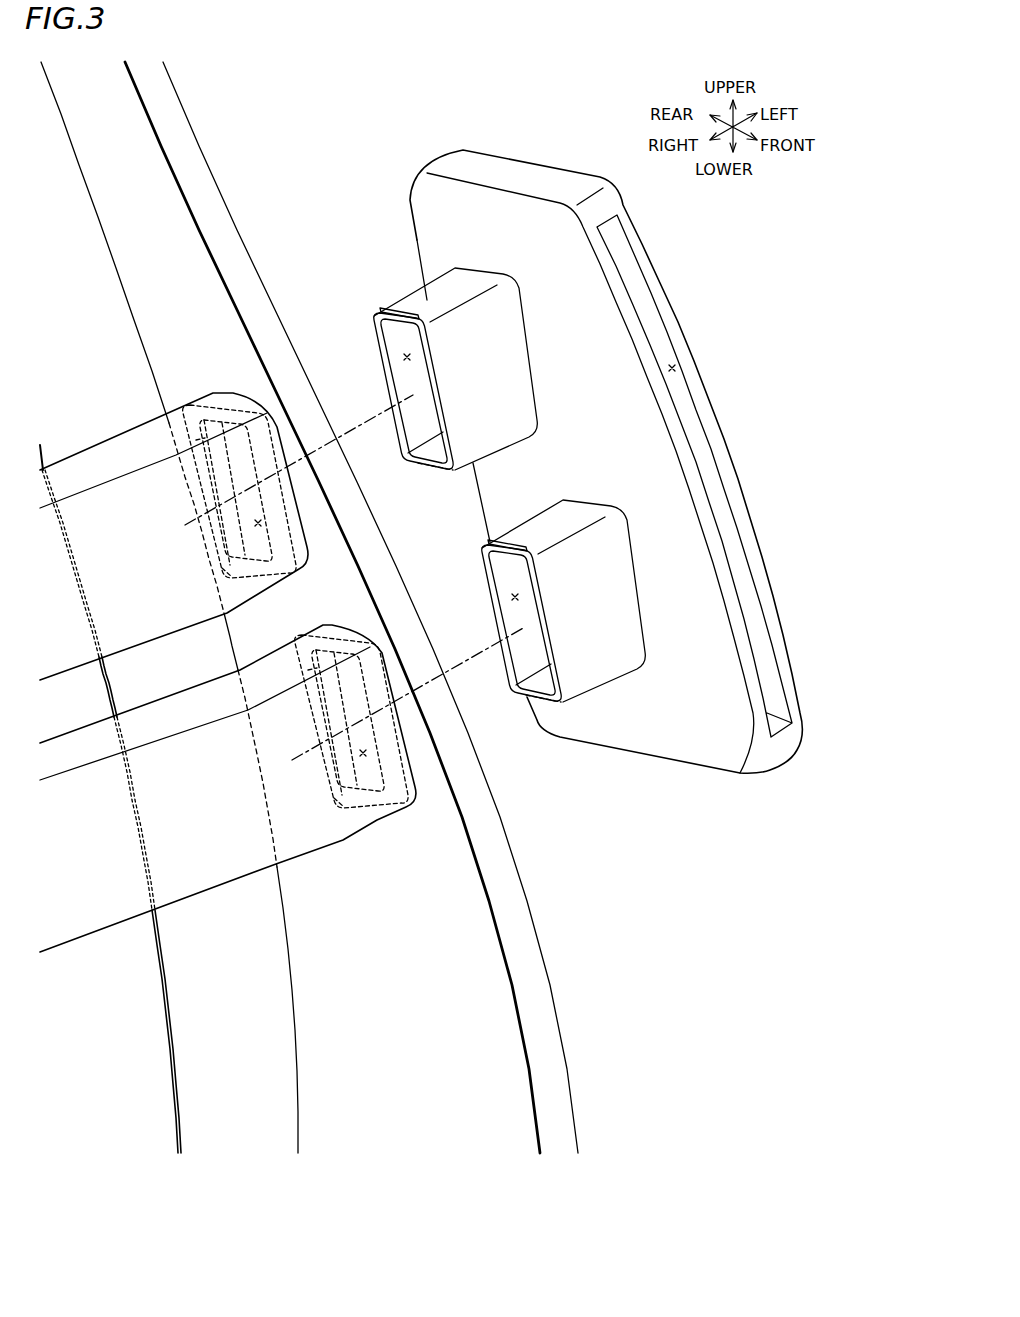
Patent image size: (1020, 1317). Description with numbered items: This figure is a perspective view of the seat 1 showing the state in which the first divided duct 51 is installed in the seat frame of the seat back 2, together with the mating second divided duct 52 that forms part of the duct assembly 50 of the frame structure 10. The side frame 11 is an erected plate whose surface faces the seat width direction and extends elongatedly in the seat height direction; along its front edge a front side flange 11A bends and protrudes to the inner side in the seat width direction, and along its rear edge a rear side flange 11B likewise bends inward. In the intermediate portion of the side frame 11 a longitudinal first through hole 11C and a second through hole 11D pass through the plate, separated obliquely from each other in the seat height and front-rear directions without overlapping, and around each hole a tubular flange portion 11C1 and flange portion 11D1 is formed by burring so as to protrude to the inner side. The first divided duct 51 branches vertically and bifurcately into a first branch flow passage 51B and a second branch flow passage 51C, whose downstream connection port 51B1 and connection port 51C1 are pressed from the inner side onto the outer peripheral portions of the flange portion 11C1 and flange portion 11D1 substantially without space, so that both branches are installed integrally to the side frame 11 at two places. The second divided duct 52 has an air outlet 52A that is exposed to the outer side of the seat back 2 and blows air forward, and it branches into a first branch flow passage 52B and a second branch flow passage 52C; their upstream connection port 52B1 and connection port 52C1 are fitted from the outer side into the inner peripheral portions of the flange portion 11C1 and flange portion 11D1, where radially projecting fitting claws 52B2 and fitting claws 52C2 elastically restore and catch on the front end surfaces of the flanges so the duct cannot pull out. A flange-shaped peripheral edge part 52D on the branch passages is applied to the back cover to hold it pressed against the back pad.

The seat 1 is at (421, 607).
The seat back 2 is at (283, 119).
The vehicle body panel assembly 10 is at (550, 917).
The side frame 11 is at (462, 1010).
The front side flange 11A is at (545, 1037).
The rear side flange 11B is at (210, 1005).
The first through hole 11C is at (254, 524).
The flange portion 11C1 is at (216, 442).
The second through hole 11D is at (363, 755).
The flange portion 11D1 is at (279, 720).
The bracket set 50 is at (421, 521).
The first divided duct 51 is at (114, 434).
The first branch flow passage 51B is at (90, 527).
The connection port 51B1 is at (214, 405).
The second branch flow passage 51C is at (217, 847).
The connection port 51C1 is at (307, 653).
The second divided duct 52 is at (531, 150).
The air outlet 52A is at (676, 370).
The first branch flow passage 52B is at (433, 297).
The connection port 52B1 is at (404, 357).
The fitting claw 52B2 is at (398, 312).
The second branch flow passage 52C is at (545, 527).
The connection port 52C1 is at (512, 597).
The fitting claw 52C2 is at (495, 545).
The peripheral edge part 52D is at (470, 218).